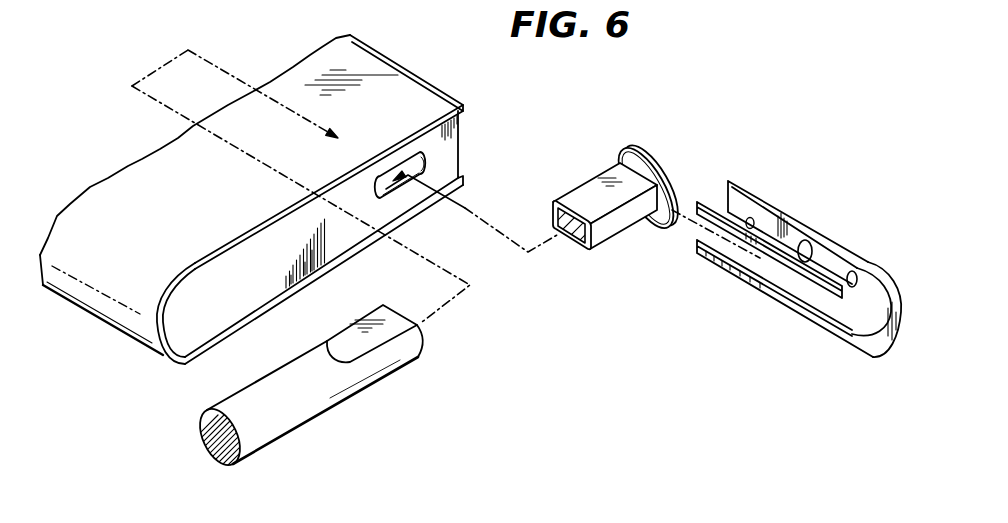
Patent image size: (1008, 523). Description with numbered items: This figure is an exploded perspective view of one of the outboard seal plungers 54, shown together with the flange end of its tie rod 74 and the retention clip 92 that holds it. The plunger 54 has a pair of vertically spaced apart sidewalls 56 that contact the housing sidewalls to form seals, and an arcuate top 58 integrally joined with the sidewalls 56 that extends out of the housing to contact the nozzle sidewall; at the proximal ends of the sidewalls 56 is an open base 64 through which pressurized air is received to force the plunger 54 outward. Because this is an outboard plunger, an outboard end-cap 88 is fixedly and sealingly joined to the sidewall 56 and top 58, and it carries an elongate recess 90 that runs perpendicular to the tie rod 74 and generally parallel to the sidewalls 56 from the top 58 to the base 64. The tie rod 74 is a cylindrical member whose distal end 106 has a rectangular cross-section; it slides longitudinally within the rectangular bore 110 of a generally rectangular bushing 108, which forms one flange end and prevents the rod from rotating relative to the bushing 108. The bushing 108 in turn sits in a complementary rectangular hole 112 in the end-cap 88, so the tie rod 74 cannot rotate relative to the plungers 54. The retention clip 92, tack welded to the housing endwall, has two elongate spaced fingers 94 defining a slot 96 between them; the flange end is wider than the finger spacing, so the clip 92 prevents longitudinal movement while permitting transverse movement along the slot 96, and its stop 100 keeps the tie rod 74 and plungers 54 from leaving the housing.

The seal plunger 54 is at (255, 204).
The plunger sidewall 56 is at (271, 216).
The top 58 is at (108, 298).
The open base 64 is at (448, 97).
The tie rod 74 is at (289, 371).
The outboard end-cap 88 is at (207, 302).
The elongate recess 90 is at (258, 300).
The retention clip 92 is at (786, 294).
The finger 94 is at (817, 286).
The slot 96 is at (753, 275).
The stop 100 is at (843, 330).
The distal end 106 is at (372, 320).
The bushing 108 is at (577, 218).
The bore 110 is at (572, 240).
The hole 112 is at (405, 179).